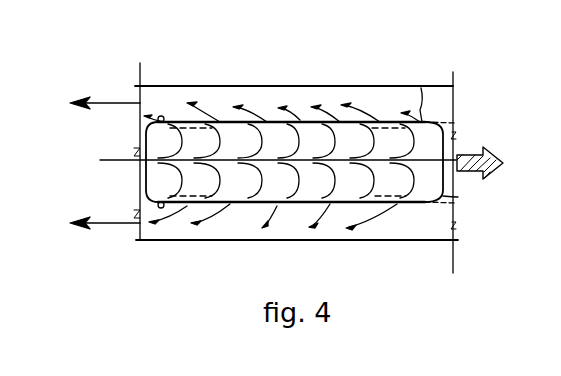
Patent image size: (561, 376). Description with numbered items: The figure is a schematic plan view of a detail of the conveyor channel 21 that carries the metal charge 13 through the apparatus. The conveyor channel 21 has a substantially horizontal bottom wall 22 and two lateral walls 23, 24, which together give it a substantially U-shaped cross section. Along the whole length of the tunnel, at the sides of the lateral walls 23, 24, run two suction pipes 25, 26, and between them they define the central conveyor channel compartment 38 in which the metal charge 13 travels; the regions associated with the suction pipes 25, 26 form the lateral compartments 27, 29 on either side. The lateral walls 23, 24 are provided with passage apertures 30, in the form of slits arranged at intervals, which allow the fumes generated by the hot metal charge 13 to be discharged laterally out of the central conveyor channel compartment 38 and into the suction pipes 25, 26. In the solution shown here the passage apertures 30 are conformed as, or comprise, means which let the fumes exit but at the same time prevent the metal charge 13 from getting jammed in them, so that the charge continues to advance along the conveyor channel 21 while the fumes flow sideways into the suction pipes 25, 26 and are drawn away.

The metal charge 13 is at (433, 139).
The conveyor channel 21 is at (305, 87).
The bottom wall 22 is at (452, 196).
The lateral wall 23 is at (227, 204).
The lateral wall 24 is at (421, 88).
The suction pipe 25 is at (421, 240).
The suction pipe 26 is at (348, 86).
The lateral compartment 27 is at (302, 240).
The lateral compartment 29 is at (232, 94).
The passage apertures 30 is at (158, 116).
The central conveyor channel compartment 38 is at (271, 126).